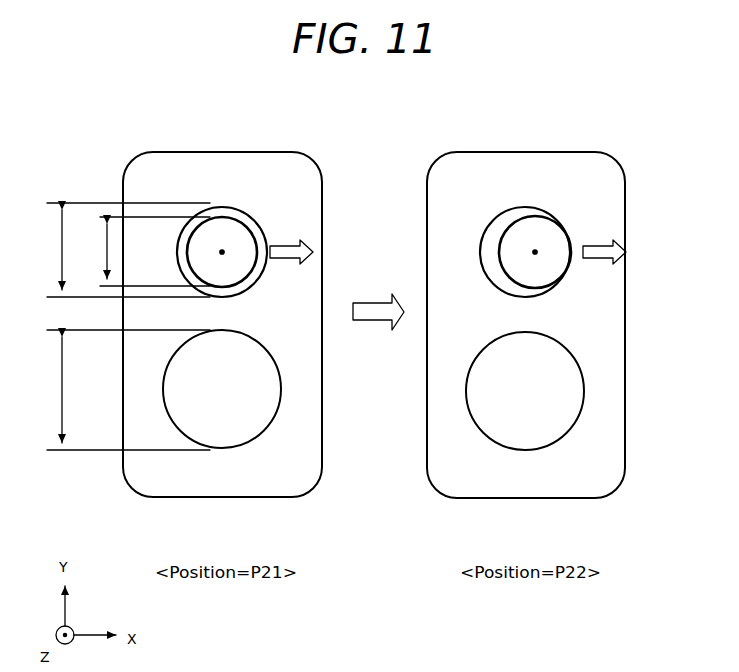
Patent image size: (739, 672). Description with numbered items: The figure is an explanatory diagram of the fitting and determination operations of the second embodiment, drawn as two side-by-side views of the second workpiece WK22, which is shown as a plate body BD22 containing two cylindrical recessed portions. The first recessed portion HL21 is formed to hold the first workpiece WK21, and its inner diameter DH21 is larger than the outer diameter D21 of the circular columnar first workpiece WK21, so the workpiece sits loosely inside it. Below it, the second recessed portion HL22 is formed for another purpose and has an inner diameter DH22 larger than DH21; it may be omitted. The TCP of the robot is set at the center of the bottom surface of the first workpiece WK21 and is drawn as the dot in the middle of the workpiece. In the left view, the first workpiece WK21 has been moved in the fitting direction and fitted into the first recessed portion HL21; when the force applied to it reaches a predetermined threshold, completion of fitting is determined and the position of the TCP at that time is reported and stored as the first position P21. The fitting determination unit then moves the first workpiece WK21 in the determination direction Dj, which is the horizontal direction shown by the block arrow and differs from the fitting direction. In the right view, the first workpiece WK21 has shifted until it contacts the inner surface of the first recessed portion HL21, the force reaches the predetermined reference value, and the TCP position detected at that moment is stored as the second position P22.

The board / base plate BD22 is at (210, 497).
The first recessed portion HL21 is at (232, 296).
The second recessed portion HL22 is at (228, 447).
The first workpiece WK21 is at (256, 238).
The second workpiece WK22 is at (323, 424).
The element TCP is at (222, 250).
The first position P21 is at (219, 179).
The second position P22 is at (535, 250).
The determination direction Dj is at (448, 264).
The inner diameter of the first recessed portion DH21 is at (113, 250).
The inner diameter of the second recessed portion DH22 is at (113, 390).
The outer diameter of the first workpiece D21 is at (141, 251).